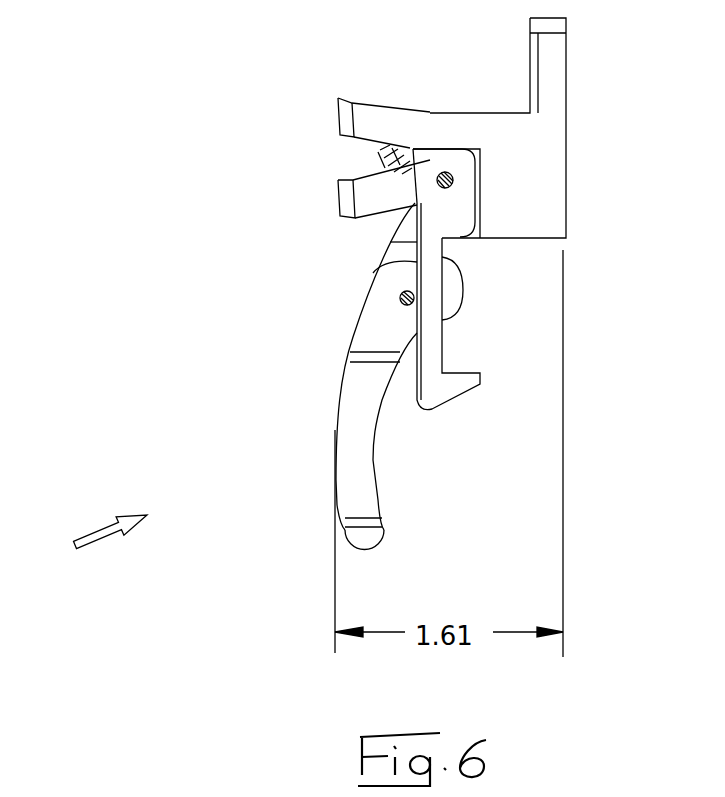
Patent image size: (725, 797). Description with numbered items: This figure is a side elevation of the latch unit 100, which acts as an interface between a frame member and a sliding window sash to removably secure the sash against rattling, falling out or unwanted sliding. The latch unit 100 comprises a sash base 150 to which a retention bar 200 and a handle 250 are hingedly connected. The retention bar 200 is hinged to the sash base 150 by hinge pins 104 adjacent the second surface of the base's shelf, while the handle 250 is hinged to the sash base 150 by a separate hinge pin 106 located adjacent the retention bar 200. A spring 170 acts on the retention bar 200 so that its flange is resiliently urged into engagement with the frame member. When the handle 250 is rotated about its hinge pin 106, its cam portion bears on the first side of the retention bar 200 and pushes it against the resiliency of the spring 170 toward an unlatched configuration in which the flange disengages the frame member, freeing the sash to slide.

The latch unit 100 is at (77, 547).
The hinge pins 104 is at (450, 175).
The hinge pin 106 is at (400, 294).
The sash base 150 is at (545, 167).
The spring 170 is at (395, 160).
The retention bar 200 is at (440, 220).
The handle 250 is at (355, 386).